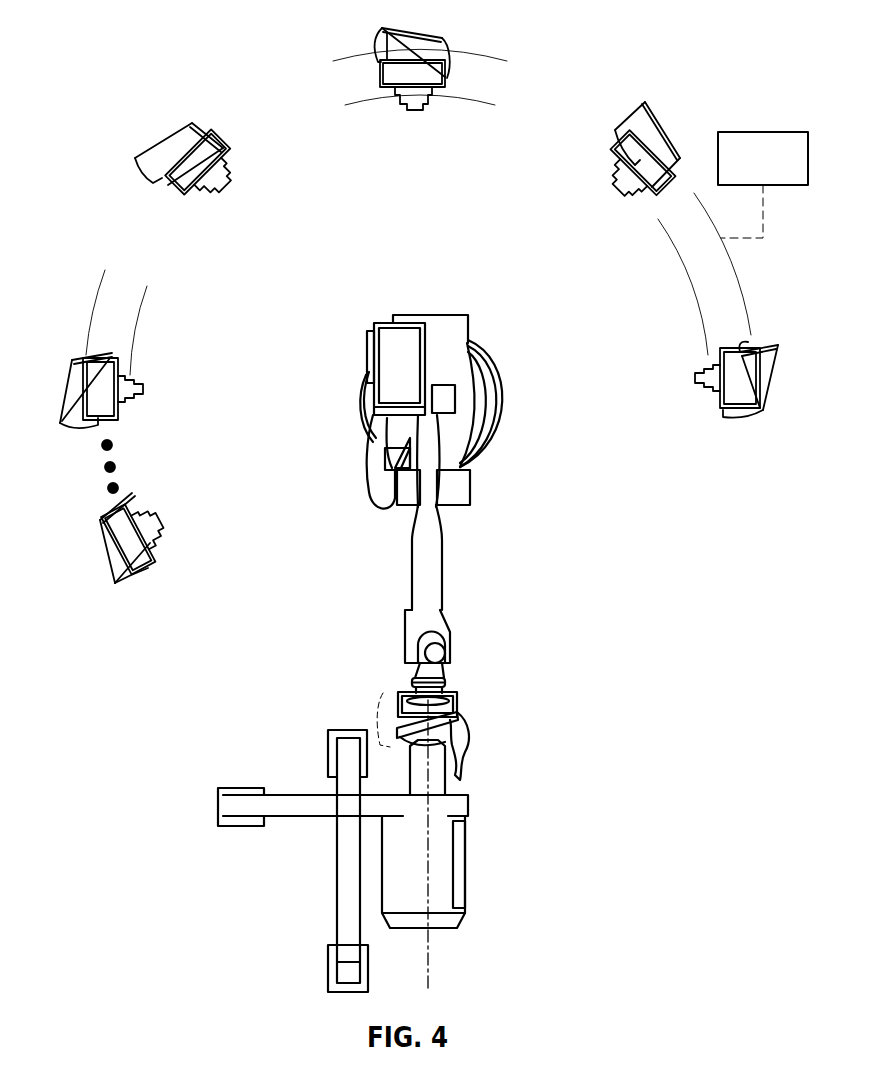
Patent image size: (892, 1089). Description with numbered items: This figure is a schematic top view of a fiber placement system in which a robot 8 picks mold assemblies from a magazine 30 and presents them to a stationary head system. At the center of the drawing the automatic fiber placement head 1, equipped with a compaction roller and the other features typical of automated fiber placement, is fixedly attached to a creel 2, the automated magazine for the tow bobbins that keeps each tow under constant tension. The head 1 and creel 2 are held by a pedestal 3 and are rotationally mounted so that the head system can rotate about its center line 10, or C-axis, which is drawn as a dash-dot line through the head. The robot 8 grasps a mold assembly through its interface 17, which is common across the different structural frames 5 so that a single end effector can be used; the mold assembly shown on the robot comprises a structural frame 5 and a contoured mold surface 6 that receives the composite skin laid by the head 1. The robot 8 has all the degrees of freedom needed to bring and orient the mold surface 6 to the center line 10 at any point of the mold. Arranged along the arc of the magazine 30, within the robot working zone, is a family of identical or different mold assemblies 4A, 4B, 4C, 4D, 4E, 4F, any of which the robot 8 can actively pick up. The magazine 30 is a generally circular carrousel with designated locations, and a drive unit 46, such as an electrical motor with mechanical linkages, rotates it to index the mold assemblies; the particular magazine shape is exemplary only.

The automatic fiber placement head 1 is at (447, 787).
The creel 2 is at (465, 880).
The pedestal 3 is at (337, 749).
The mold assembly 4A is at (318, 440).
The mold assembly 4B is at (302, 385).
The mold assembly 4C is at (340, 305).
The mold assembly 4D is at (412, 89).
The mold assembly 4E is at (498, 305).
The mold assembly 4F is at (575, 385).
The structural frame 5 is at (457, 695).
The mold surface 6 is at (467, 742).
The robot 8 is at (438, 560).
The center line 10 is at (430, 972).
The interface 17 is at (447, 691).
The magazine 30 is at (693, 193).
The drive unit 46 is at (733, 132).